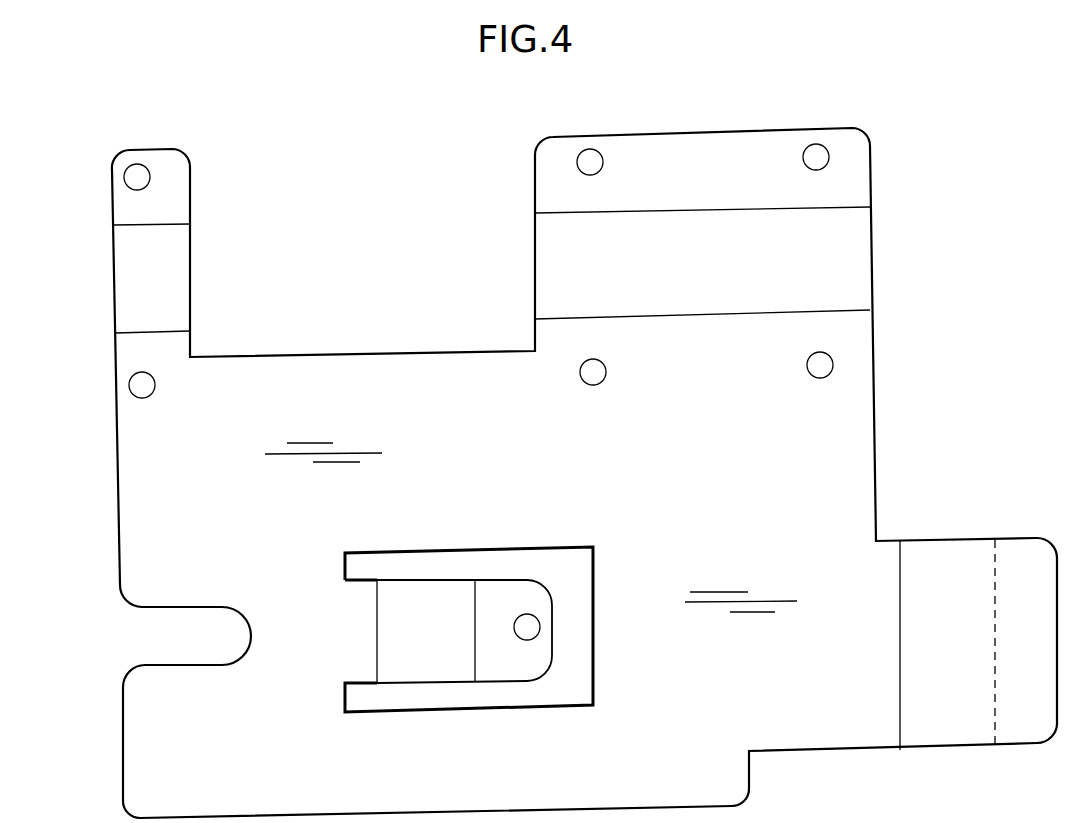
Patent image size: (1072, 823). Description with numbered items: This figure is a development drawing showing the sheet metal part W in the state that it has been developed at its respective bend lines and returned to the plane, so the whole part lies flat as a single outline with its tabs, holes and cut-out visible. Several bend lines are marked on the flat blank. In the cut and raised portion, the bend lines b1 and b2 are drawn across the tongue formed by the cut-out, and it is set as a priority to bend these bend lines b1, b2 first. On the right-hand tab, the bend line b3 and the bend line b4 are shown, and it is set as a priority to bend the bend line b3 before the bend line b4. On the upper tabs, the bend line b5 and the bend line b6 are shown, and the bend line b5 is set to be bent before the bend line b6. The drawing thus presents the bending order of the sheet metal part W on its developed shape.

The sheet metal part W is at (355, 197).
The bend line b1 is at (476, 617).
The bend line b2 is at (379, 617).
The bend line b3 is at (995, 600).
The bend line b4 is at (901, 603).
The bend line b5 is at (149, 224).
The bend line b6 is at (151, 331).